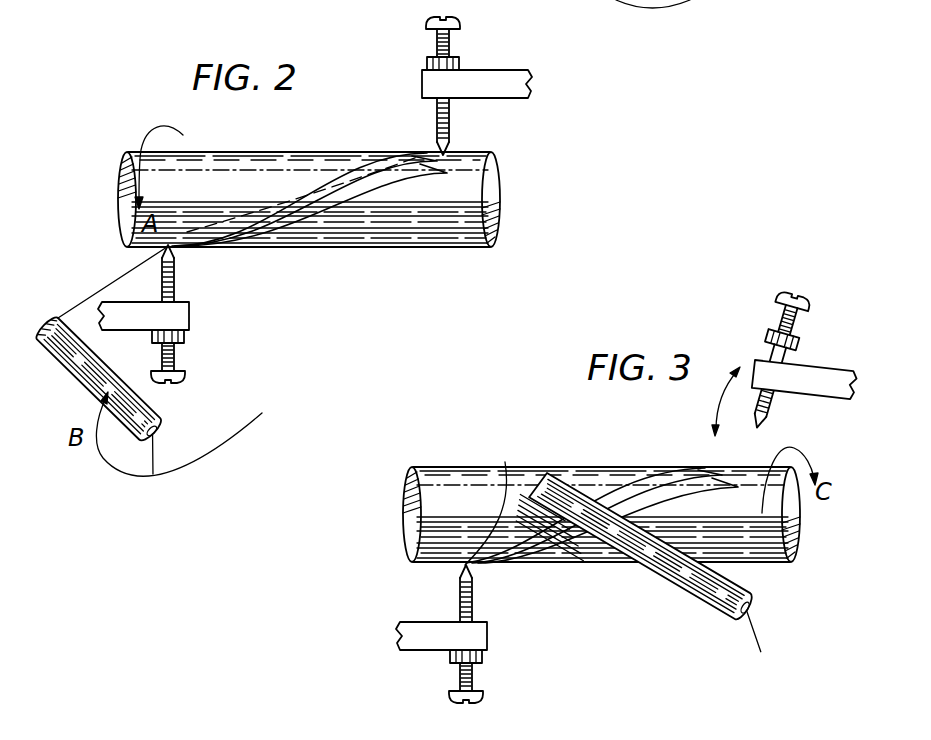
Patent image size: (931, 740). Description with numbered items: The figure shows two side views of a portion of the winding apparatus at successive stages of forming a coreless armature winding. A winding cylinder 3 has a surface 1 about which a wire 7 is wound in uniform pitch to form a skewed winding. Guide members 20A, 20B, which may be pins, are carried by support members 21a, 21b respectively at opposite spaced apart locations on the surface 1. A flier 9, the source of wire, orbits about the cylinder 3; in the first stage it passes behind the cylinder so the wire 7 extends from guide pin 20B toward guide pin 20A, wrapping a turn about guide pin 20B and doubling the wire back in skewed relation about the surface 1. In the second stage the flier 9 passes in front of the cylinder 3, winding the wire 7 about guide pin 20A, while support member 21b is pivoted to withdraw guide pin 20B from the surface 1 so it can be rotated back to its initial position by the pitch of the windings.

In FIG. 2, the surface 1 is at (387, 249).
In FIG. 3, the surface 1 is at (534, 485).
In FIG. 2, the winding cylinder 3 is at (283, 152).
In FIG. 3, the winding cylinder 3 is at (618, 467).
In FIG. 2, the wire 7 is at (108, 285).
In FIG. 3, the wire 7 is at (489, 501).
In FIG. 2, the flier 9 is at (160, 400).
In FIG. 3, the flier 9 is at (678, 592).
In FIG. 2, the guide member 20A is at (176, 275).
In FIG. 3, the guide member 20A is at (474, 593).
In FIG. 2, the guide member 20B is at (442, 135).
In FIG. 3, the guide member 20B is at (765, 414).
In FIG. 2, the support member 21a is at (190, 319).
In FIG. 3, the support member 21a is at (410, 645).
In FIG. 2, the support member 21b is at (497, 71).
In FIG. 3, the support member 21b is at (830, 366).